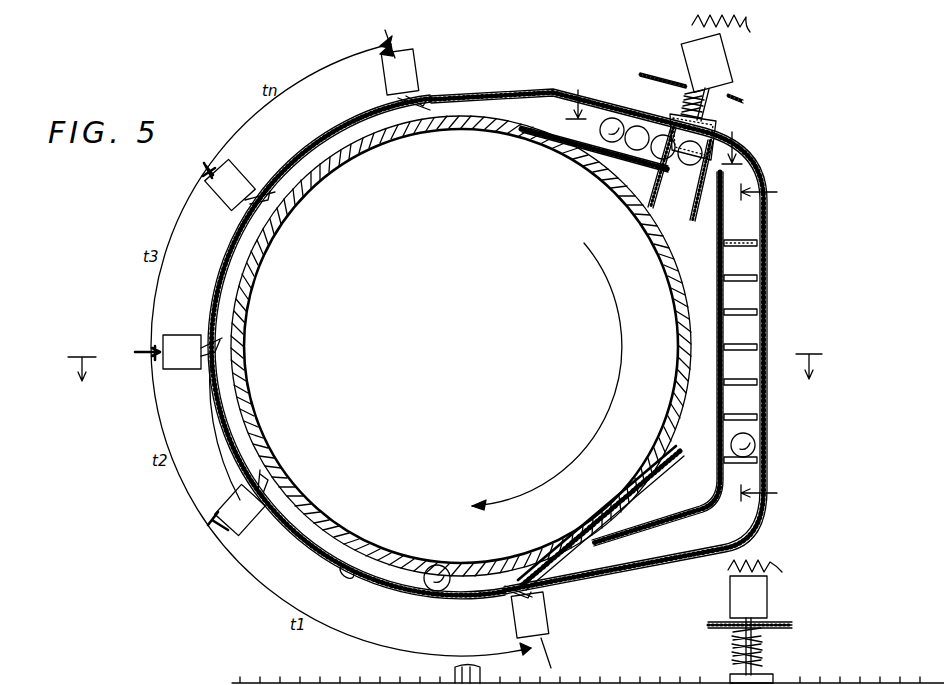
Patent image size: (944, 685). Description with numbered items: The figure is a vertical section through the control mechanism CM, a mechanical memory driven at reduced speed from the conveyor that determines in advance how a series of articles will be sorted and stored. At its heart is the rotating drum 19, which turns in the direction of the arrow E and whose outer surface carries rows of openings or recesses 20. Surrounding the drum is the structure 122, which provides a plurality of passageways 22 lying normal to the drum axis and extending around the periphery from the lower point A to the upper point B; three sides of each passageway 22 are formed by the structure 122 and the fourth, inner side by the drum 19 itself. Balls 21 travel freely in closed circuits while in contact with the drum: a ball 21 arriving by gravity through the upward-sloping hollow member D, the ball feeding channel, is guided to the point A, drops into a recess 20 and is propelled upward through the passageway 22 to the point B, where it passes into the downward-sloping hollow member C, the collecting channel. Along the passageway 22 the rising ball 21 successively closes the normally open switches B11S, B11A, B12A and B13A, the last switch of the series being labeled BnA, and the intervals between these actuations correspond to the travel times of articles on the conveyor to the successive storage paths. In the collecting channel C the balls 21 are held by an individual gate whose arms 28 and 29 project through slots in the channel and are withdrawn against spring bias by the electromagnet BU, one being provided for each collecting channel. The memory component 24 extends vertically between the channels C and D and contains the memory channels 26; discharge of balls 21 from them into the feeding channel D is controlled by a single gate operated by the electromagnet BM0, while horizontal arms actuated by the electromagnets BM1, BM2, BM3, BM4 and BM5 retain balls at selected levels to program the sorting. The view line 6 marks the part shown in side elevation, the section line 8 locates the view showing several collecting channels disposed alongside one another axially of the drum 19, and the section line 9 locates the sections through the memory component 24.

The drum 19 is at (445, 310).
The openings or recesses 20 is at (258, 275).
The balls 21 is at (638, 146).
The passageways 22 is at (346, 578).
The memory component 24 is at (781, 219).
The arm of individual gate 28 is at (645, 204).
The arm of individual gate 29 is at (695, 222).
The structure 122 is at (222, 463).
The memory channels 26 is at (722, 650).
The view line 6 is at (445, 380).
The section line 8— 8 is at (658, 115).
The section line 9— 9 is at (768, 342).
The elongated hollow member (collecting channel) C is at (612, 112).
The control mechanism CM is at (521, 74).
The elongated hollow member (ball feeding channel) D is at (662, 548).
The arrow indicating drum rotation E is at (612, 362).
The lower end point of passageway A is at (516, 556).
The upper end point of passageway B is at (505, 135).
The electromagnet for single gate BM0 is at (805, 468).
The electromagnet for memory arm BM1 is at (796, 244).
The electromagnet for memory arm BM2 is at (796, 279).
The electromagnet for memory arm BM3 is at (796, 313).
The electromagnet for memory arm BM4 is at (796, 348).
The electromagnet for memory arm BM5 is at (796, 383).
The electromagnet for individual gate BU is at (700, 60).
The sensor BnA is at (418, 62).
The electrical switch B13A is at (255, 163).
The electrical switch B12A is at (186, 338).
The electrical switch B11A is at (245, 534).
The electrical switch B11S is at (547, 616).